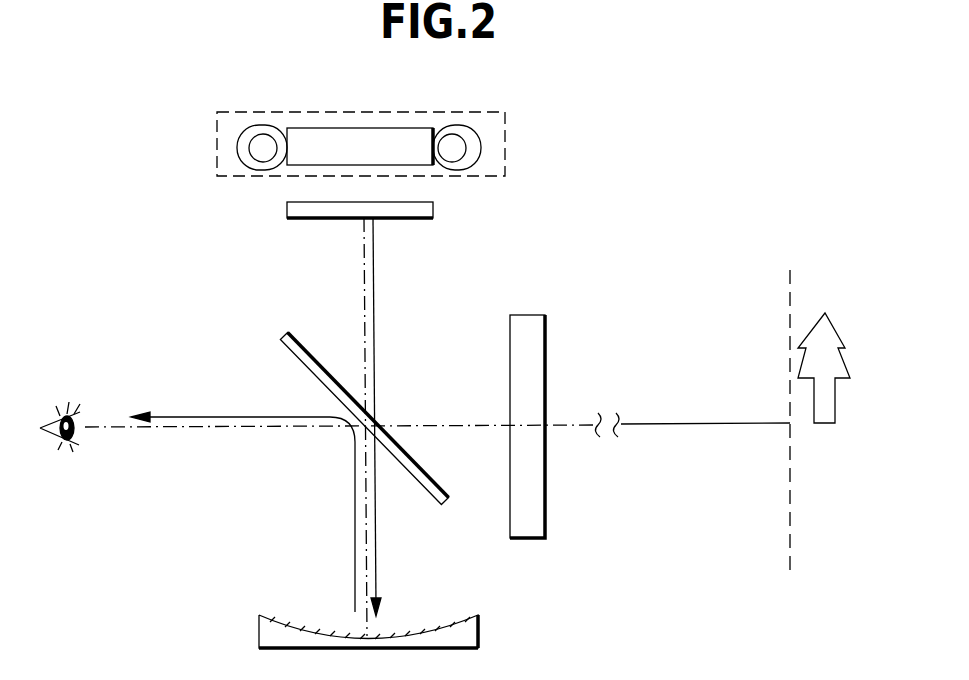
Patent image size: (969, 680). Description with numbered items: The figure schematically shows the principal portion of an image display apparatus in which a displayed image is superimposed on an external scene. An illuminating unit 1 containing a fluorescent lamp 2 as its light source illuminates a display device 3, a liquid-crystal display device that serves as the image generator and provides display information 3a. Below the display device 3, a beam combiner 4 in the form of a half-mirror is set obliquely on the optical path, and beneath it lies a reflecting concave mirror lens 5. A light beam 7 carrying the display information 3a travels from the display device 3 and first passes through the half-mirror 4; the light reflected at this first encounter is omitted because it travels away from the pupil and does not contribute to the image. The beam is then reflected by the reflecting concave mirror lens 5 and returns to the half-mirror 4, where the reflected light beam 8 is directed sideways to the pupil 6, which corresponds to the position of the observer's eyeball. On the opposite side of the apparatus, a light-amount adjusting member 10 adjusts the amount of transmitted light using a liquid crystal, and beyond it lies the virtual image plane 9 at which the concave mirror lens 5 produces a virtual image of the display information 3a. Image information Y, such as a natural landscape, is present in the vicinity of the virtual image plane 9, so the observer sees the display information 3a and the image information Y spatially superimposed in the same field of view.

The illuminating unit 1 is at (506, 128).
The fluorescent lamp 2 is at (466, 148).
The display device 3 is at (433, 205).
The display information 3a is at (410, 219).
The beam combiner 4 is at (283, 334).
The reflecting concave mirror lens 5 is at (478, 634).
The pupil 6 is at (72, 402).
The light beam 7 is at (375, 358).
The light beam 8 is at (210, 418).
The virtual image plane 9 is at (790, 337).
The light-amount adjusting member 10 is at (535, 540).
The image information Y is at (832, 314).